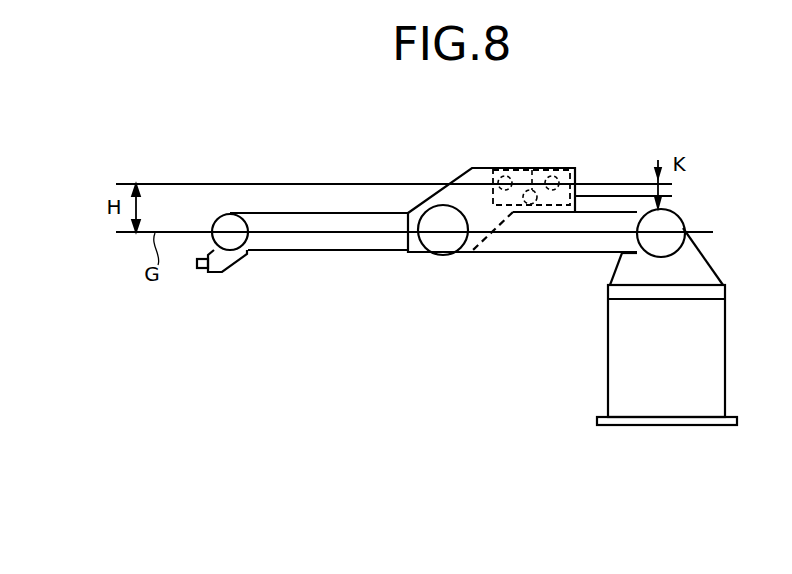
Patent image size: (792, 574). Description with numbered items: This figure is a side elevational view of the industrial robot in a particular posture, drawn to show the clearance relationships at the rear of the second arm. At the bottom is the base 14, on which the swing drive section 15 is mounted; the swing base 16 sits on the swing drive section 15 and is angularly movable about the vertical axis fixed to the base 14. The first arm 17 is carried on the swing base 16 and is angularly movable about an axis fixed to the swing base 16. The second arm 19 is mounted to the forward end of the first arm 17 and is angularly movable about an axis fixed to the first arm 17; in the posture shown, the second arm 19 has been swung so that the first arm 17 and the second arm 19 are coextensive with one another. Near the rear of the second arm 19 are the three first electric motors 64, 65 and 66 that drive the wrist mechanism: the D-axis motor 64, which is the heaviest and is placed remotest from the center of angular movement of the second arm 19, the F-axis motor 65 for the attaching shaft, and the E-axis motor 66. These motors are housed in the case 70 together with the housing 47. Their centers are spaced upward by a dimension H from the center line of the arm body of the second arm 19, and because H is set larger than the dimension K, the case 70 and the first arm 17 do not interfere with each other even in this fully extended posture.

The base 14 is at (600, 417).
The swing drive section 15 is at (622, 330).
The swing base 16 is at (698, 265).
The first arm 17 is at (505, 249).
The second arm 19 is at (298, 250).
The sensor housing 47 is at (447, 188).
The D-axis motor 64 is at (560, 170).
The F-axis motor 65 is at (530, 188).
The E-axis motor 66 is at (495, 172).
The case 70 is at (508, 170).